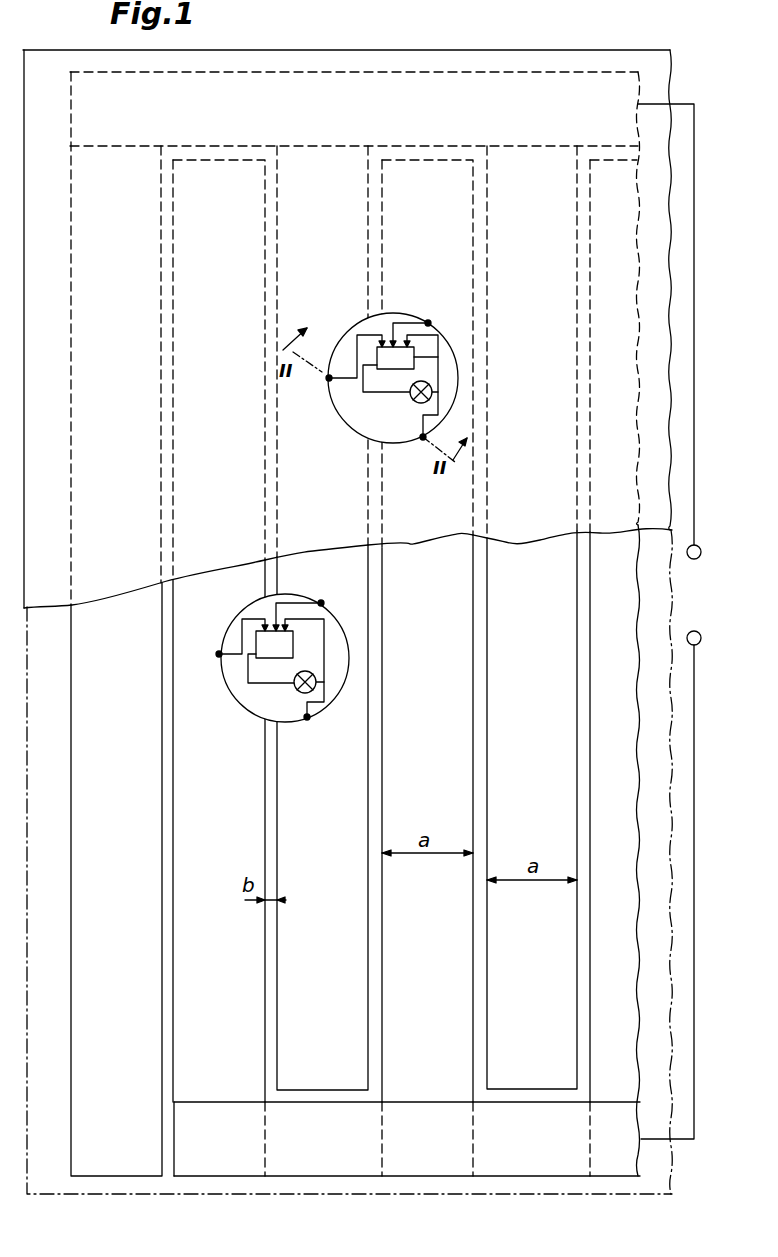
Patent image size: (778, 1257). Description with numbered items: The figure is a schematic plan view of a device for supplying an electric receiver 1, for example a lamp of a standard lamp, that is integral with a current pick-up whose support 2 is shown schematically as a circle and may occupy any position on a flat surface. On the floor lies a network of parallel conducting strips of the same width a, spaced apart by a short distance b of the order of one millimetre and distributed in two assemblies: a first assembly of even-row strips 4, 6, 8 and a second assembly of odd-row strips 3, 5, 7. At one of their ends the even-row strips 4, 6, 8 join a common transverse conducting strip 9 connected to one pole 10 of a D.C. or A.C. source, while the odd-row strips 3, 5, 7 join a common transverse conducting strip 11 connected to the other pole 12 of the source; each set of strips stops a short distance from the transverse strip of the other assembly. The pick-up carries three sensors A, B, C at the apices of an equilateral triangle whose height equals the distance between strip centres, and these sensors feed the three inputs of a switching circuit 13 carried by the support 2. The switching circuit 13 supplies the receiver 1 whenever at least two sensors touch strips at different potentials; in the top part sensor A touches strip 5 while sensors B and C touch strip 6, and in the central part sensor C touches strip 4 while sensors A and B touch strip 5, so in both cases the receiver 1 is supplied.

The electric receiver 1 is at (432, 392).
The current pick-up support 2 is at (255, 720).
The conducting strip of odd row 3 is at (101, 506).
The conducting strip of even row 4 is at (203, 510).
The conducting strip of odd row 5 is at (308, 506).
The conducting strip of even row 6 is at (410, 506).
The conducting strip of odd row 7 is at (520, 503).
The conducting strip of even row 8 is at (601, 502).
The common transverse conducting strip 9 is at (618, 1158).
The terminal 10 is at (701, 638).
The common transverse conducting strip 11 is at (508, 80).
The pole of the source of electrical current 12 is at (700, 548).
The switching circuit 13 is at (414, 357).